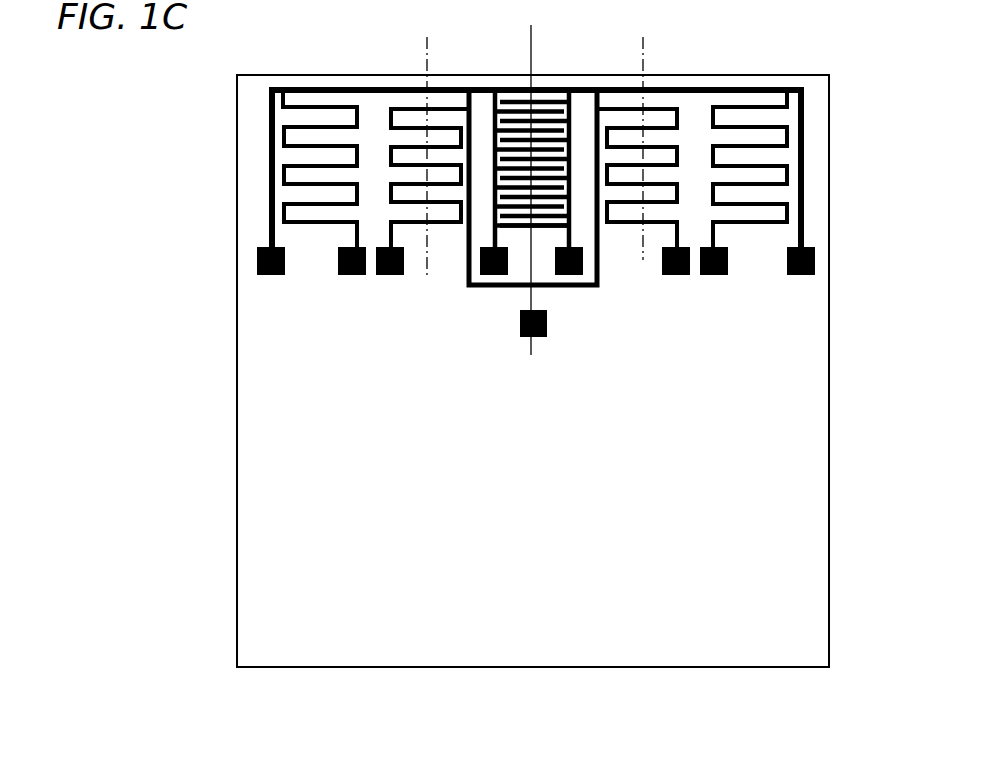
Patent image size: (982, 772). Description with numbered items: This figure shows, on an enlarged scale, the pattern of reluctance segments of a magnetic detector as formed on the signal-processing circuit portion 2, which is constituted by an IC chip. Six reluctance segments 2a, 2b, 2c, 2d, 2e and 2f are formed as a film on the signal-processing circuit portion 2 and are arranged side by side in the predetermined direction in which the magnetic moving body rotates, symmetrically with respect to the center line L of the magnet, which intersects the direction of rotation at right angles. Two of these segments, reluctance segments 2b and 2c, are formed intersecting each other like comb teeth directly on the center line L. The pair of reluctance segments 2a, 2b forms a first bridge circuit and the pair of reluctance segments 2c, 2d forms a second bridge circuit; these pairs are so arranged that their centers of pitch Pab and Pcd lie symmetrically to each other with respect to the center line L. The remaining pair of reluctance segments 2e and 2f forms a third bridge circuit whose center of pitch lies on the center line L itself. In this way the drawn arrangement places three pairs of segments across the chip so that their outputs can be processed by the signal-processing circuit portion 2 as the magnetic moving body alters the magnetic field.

The signal-processing circuit portion 2 is at (829, 446).
The reluctance segment 2a is at (310, 224).
The reluctance segment 2b is at (492, 186).
The reluctance segment 2c is at (575, 186).
The reluctance segment 2d is at (752, 224).
The reluctance segment 2e is at (423, 224).
The reluctance segment 2f is at (644, 228).
The center line L is at (531, 178).
The center of pitch Pab is at (428, 143).
The center of pitch Pcd is at (645, 135).